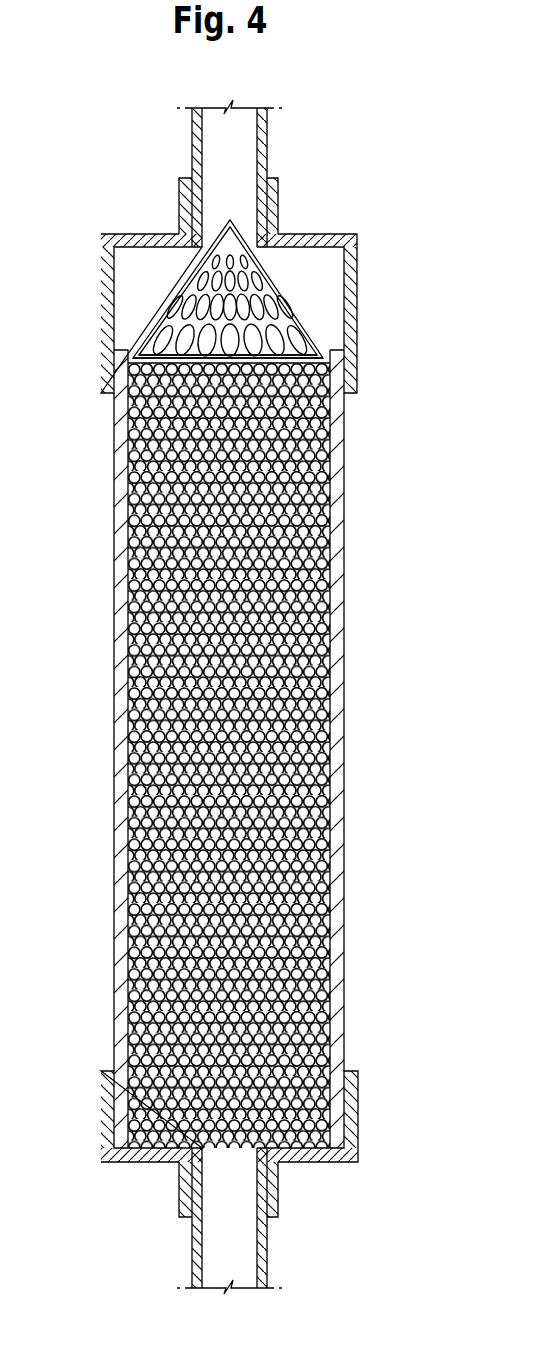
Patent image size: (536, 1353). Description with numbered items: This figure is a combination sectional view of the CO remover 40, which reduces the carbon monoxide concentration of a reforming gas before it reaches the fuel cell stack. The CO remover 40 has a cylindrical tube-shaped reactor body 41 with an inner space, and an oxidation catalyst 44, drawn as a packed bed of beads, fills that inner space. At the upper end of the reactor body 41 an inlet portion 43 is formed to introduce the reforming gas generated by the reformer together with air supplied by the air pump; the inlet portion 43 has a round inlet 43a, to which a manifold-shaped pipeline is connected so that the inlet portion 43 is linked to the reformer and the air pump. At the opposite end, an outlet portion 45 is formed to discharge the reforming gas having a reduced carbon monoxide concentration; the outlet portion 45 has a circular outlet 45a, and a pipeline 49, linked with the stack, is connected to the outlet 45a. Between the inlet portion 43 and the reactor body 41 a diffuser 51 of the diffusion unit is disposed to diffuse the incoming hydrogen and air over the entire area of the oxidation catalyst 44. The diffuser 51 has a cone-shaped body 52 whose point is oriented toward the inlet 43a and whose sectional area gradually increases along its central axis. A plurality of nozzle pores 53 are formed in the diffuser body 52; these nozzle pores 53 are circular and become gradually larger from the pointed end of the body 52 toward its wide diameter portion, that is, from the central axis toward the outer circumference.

The CO remover 40 is at (214, 81).
The reactor body 41 is at (345, 490).
The inlet portion 43 is at (377, 267).
The inlet 43a is at (268, 168).
The oxidation catalyst 44 is at (326, 421).
The outlet portion 45 is at (378, 1157).
The outlet 45a is at (190, 1217).
The pipeline 49 is at (268, 1258).
The diffuser 51 is at (152, 293).
The cone-shaped body 52 is at (162, 319).
The nozzle pores 53 is at (148, 336).